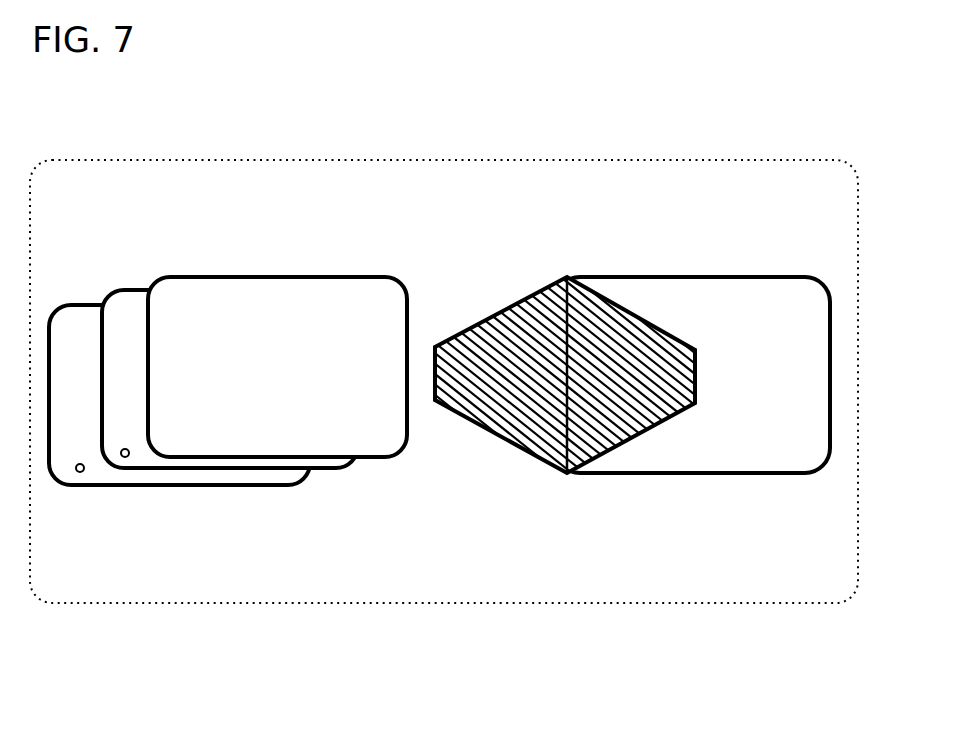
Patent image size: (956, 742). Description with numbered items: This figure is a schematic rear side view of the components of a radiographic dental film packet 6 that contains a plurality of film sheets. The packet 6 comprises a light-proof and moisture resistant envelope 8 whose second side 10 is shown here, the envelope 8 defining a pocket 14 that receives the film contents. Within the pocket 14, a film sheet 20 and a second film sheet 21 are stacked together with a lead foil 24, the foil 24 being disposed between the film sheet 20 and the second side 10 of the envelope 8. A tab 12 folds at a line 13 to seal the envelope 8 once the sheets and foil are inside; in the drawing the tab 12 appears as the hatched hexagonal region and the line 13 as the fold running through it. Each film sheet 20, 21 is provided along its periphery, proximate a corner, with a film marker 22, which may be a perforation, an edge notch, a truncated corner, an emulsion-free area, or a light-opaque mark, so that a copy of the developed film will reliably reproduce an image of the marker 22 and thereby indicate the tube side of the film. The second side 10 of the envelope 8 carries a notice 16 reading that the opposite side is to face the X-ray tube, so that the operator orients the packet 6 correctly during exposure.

The radiographic dental film packet 6 is at (503, 603).
The envelope 8 is at (696, 381).
The second side 10 is at (737, 435).
The tab 12 is at (525, 327).
The line 13 is at (567, 277).
The pocket 14 is at (650, 378).
The notice 16 is at (760, 285).
The film sheet 20 is at (60, 388).
The second film sheet 21 is at (108, 388).
The film marker 22 is at (84, 470).
The lead foil 24 is at (255, 388).